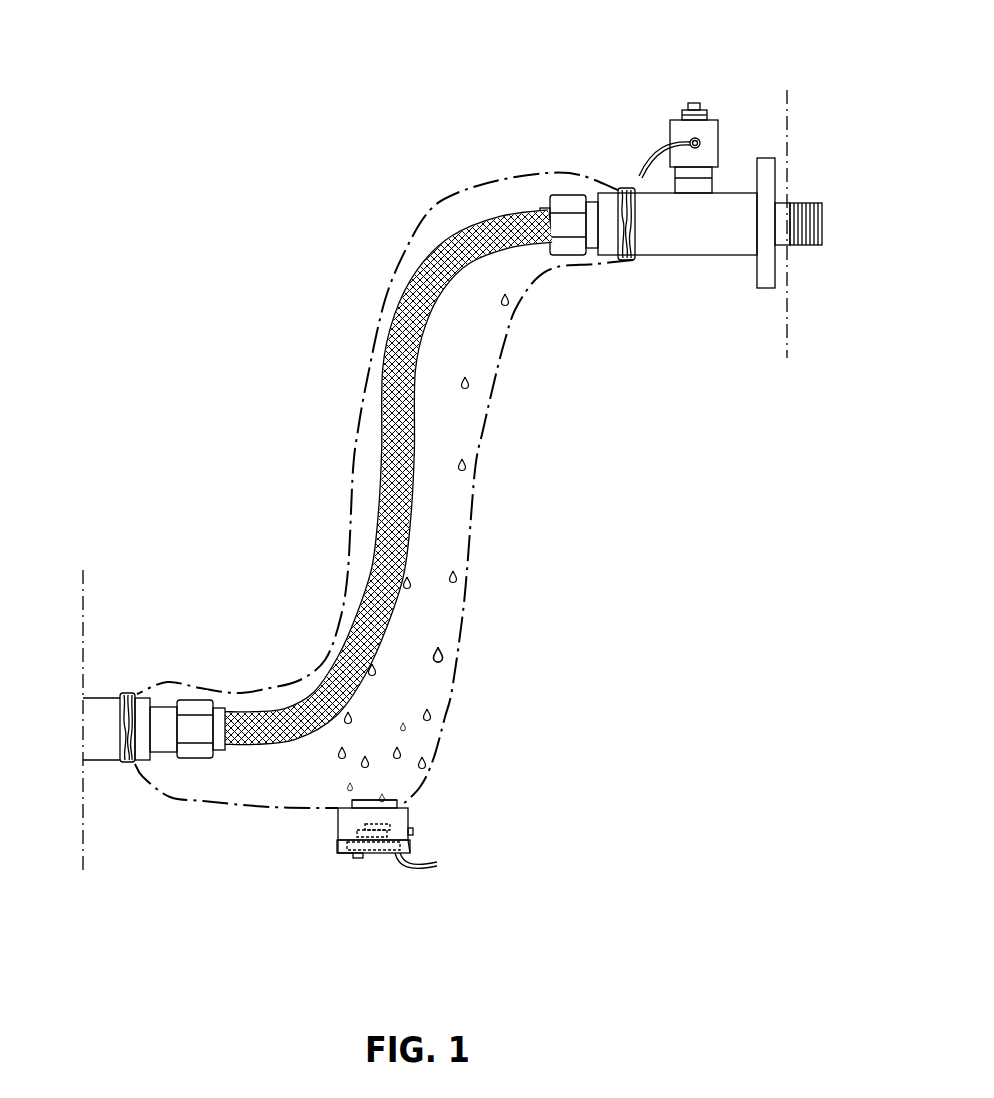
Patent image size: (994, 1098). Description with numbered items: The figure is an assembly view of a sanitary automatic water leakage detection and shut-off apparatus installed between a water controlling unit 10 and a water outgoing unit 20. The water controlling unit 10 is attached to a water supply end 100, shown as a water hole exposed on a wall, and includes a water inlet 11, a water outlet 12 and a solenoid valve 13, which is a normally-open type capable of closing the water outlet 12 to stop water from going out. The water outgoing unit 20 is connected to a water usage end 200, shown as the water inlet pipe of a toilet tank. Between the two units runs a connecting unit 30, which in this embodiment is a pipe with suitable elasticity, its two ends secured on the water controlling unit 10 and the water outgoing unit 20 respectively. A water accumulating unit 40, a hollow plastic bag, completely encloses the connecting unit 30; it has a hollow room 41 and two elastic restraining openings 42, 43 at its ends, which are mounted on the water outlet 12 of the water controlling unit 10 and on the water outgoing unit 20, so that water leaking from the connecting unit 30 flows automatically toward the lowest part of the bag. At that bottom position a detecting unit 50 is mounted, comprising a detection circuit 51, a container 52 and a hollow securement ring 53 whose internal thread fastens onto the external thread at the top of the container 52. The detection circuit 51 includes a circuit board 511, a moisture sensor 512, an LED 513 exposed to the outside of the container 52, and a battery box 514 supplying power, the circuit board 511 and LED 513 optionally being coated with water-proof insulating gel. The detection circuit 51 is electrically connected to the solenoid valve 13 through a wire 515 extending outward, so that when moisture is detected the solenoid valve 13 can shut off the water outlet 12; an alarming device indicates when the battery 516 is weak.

The water supply end 100 is at (785, 127).
The water usage end 200 is at (85, 598).
The water controlling unit 10 is at (723, 256).
The water inlet 11 is at (805, 247).
The water outlet 12 is at (572, 203).
The solenoid valve 13 is at (678, 132).
The water outgoing unit 20 is at (113, 690).
The connecting unit 30 is at (426, 263).
The water accumulating unit 40 is at (533, 173).
The hollow room 41 is at (448, 420).
The elastic restraining opening 42 is at (634, 238).
The elastic restraining opening 43 is at (127, 742).
The detecting unit 50 is at (350, 875).
The detection circuit 51 is at (346, 826).
The circuit board 511 is at (386, 858).
The moisture sensor 512 is at (380, 825).
The LED 513 is at (412, 830).
The battery box 514 is at (343, 853).
The wire 515 is at (423, 872).
The battery 516 is at (427, 850).
The container 52 is at (338, 841).
The hollow securement ring 53 is at (392, 800).